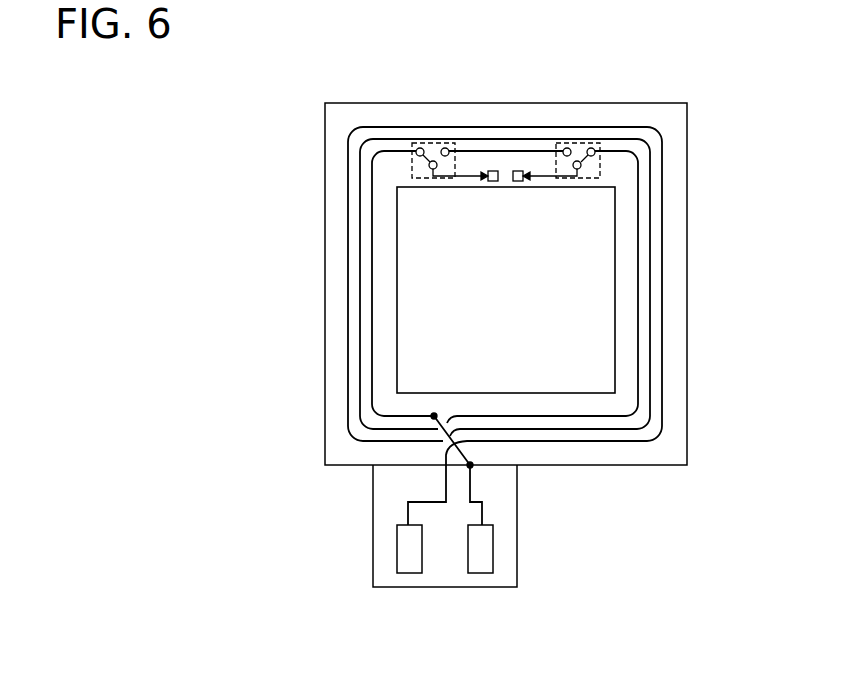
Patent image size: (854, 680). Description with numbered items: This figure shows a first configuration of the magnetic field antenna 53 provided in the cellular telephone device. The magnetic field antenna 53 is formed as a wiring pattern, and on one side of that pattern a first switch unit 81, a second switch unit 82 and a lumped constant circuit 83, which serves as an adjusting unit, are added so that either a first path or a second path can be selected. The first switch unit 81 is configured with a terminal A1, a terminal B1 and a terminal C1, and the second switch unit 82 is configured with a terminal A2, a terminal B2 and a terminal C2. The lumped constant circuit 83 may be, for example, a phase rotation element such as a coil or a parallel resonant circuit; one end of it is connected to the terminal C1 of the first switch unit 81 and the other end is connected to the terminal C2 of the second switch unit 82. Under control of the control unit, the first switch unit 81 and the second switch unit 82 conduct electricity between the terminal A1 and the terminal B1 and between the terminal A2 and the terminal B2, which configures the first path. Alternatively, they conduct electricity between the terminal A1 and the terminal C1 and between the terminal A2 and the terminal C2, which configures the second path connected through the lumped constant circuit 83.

The magnetic field antenna 53 is at (325, 197).
The first switch unit 81 is at (375, 165).
The second switch unit 82 is at (640, 165).
The lumped constant circuit 83 is at (491, 170).
The terminal A1 is at (419, 147).
The terminal B1 is at (446, 147).
The terminal C1 is at (418, 180).
The terminal A2 is at (591, 147).
The terminal B2 is at (567, 147).
The terminal C2 is at (577, 180).